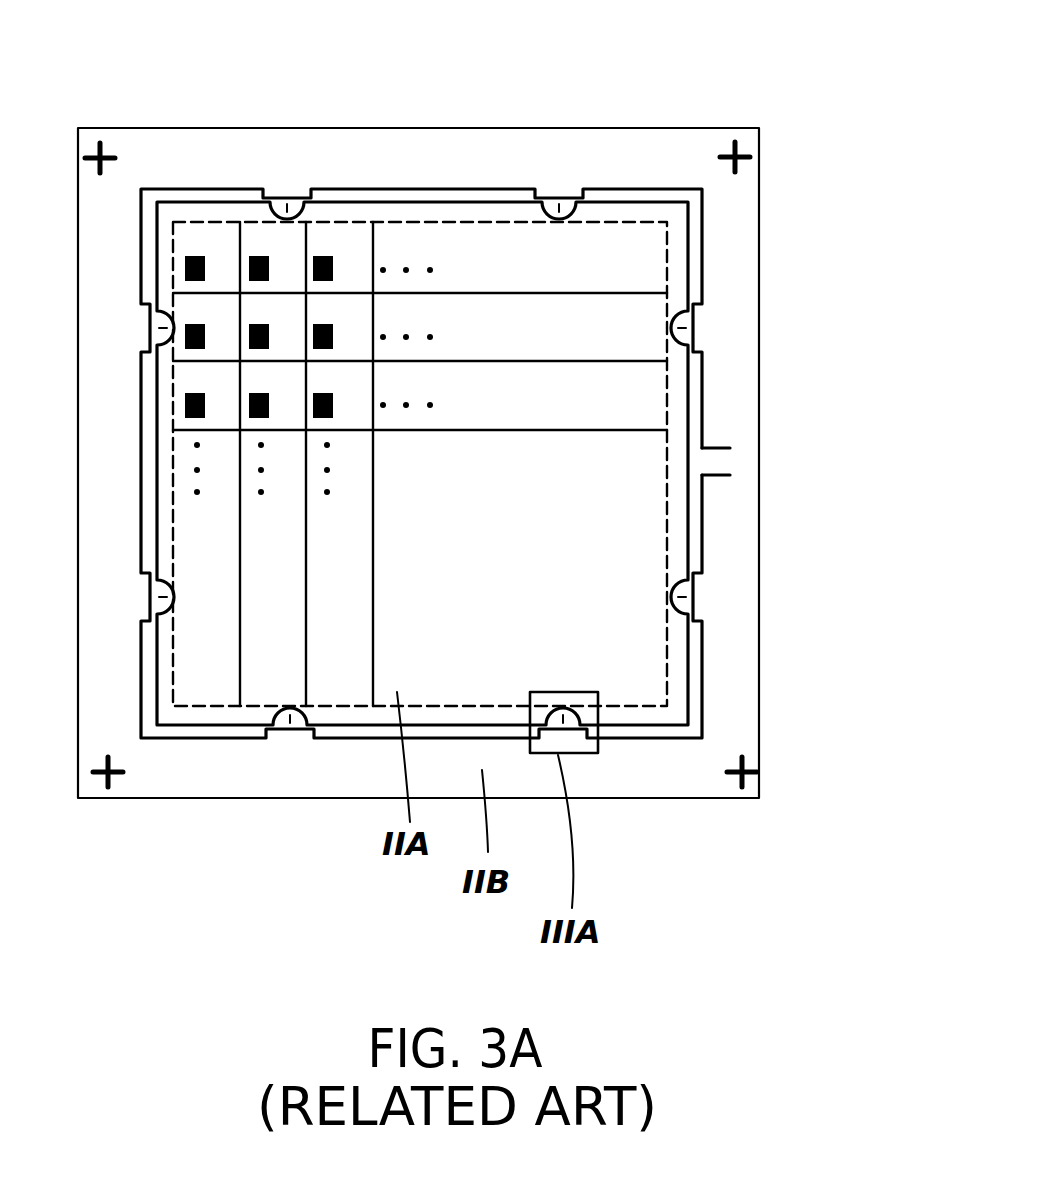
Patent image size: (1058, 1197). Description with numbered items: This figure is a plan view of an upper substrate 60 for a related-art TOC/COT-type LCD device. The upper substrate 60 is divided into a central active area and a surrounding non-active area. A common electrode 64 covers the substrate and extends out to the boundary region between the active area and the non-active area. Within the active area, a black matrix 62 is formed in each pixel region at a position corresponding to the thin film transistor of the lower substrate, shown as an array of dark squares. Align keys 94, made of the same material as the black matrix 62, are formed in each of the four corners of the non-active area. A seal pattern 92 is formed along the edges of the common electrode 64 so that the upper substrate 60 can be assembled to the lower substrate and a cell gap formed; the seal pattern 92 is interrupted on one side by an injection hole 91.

The upper substrate 60 is at (857, 143).
The black matrix 62 is at (328, 255).
The common electrode 64 is at (338, 738).
The injection hole 91 is at (724, 458).
The seal pattern 92 is at (618, 740).
The align keys 94 is at (112, 143).